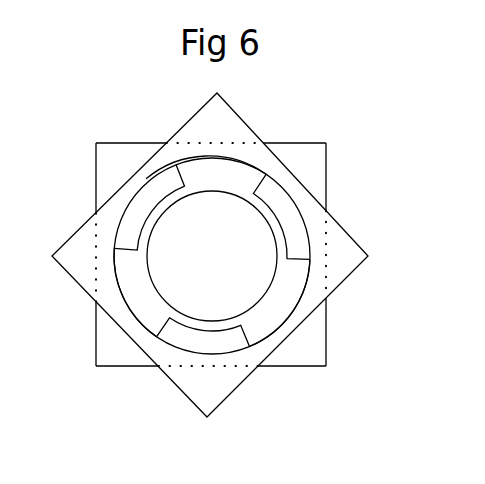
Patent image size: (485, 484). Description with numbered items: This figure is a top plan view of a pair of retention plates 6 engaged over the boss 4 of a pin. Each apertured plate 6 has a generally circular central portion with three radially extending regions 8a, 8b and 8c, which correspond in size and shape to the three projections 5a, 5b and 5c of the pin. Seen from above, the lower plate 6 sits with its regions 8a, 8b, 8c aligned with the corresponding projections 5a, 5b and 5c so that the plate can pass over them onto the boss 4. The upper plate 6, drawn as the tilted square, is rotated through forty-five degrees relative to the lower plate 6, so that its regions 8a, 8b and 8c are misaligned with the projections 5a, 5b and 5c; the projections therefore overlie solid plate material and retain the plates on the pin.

The boss 4 is at (212, 256).
The projection 5a is at (205, 178).
The projection 5b is at (140, 300).
The projection 5c is at (283, 316).
The apertured plate 6 is at (315, 180).
The radially extending region 8a is at (298, 232).
The radially extending region 8b is at (135, 219).
The radially extending region 8c is at (218, 344).